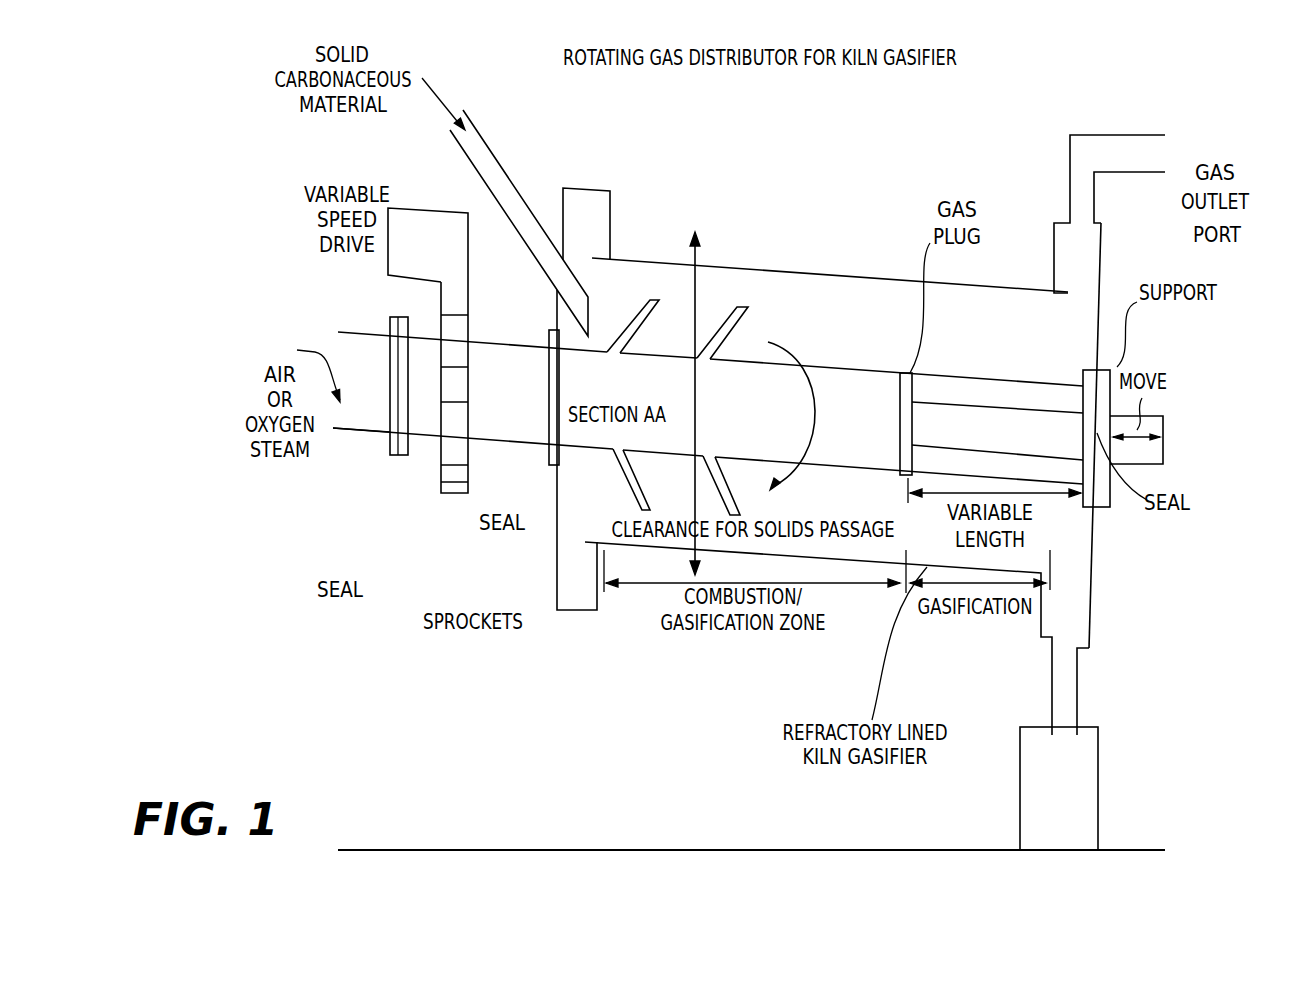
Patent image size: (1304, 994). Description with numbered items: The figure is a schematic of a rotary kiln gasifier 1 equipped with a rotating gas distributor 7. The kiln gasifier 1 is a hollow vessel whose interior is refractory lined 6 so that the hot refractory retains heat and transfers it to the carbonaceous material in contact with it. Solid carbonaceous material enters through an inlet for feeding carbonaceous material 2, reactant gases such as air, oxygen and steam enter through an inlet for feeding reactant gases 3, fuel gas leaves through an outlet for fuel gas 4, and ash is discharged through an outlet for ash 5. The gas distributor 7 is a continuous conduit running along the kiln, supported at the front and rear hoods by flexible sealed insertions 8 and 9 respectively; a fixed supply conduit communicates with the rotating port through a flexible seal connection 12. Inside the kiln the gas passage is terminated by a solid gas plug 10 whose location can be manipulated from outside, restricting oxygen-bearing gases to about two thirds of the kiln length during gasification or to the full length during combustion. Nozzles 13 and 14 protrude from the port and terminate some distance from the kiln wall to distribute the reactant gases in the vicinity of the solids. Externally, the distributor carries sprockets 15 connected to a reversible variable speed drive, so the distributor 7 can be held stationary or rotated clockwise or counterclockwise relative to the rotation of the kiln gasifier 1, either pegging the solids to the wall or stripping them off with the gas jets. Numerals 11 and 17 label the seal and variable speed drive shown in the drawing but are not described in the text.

The rotary kiln gasifier 1 is at (682, 267).
The inlet for feeding carbonaceous material 2 is at (505, 168).
The inlet for feeding reactant gases 3 is at (307, 369).
The outlet for fuel gas 4 is at (1158, 153).
The outlet for ash 5 is at (1052, 638).
The refractory lining 6 is at (870, 565).
The rotating gas distributor 7 is at (420, 440).
The flexible sealed insertion 8 is at (542, 460).
The flexible sealed insertion 9 is at (1097, 470).
The gas plug 10 is at (898, 388).
The inlet pipe 11 is at (358, 433).
The flexible seal connection 12 is at (398, 457).
The nozzle 13 is at (628, 327).
The nozzle 14 is at (737, 320).
The sprockets 15 is at (488, 348).
The variable speed drive 17 is at (420, 223).